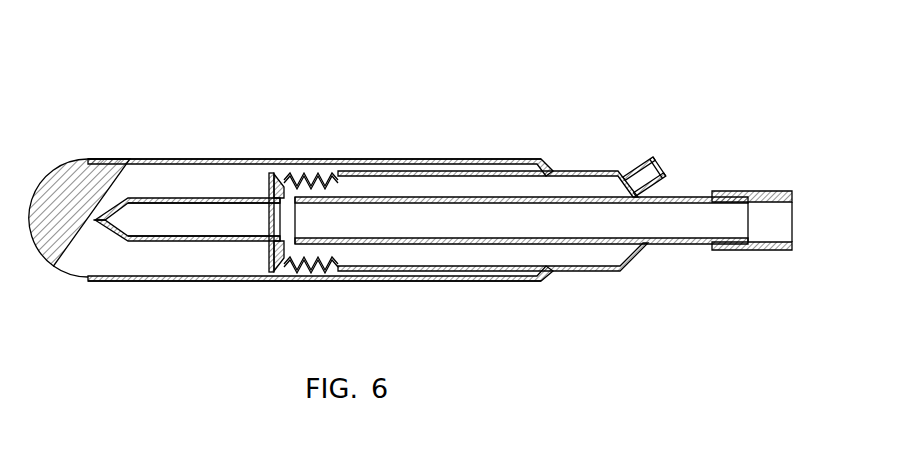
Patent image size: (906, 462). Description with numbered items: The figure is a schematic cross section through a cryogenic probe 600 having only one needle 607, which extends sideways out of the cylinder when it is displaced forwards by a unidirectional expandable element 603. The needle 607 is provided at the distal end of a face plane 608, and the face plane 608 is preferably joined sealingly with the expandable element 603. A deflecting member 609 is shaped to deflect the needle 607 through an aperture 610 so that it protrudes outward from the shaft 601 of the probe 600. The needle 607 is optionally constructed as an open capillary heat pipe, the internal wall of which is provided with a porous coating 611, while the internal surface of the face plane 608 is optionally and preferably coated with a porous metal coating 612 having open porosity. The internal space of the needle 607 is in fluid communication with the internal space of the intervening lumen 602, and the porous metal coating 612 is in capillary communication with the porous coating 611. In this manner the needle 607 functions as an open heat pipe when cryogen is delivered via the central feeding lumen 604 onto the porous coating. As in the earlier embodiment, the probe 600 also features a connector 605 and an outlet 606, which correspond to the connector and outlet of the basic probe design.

The probe 600 is at (400, 131).
The shaft 601 is at (450, 171).
The intervening lumen 602 is at (417, 269).
The expandable element 603 is at (302, 268).
The central feeding lumen 604 is at (523, 197).
The connector 605 is at (762, 191).
The outlet 606 is at (641, 160).
The needle 607 is at (157, 198).
The face plane 608 is at (270, 172).
The deflecting member 609 is at (52, 172).
The aperture 610 is at (75, 278).
The porous coating 611 is at (163, 241).
The porous metal coating 612 is at (286, 178).